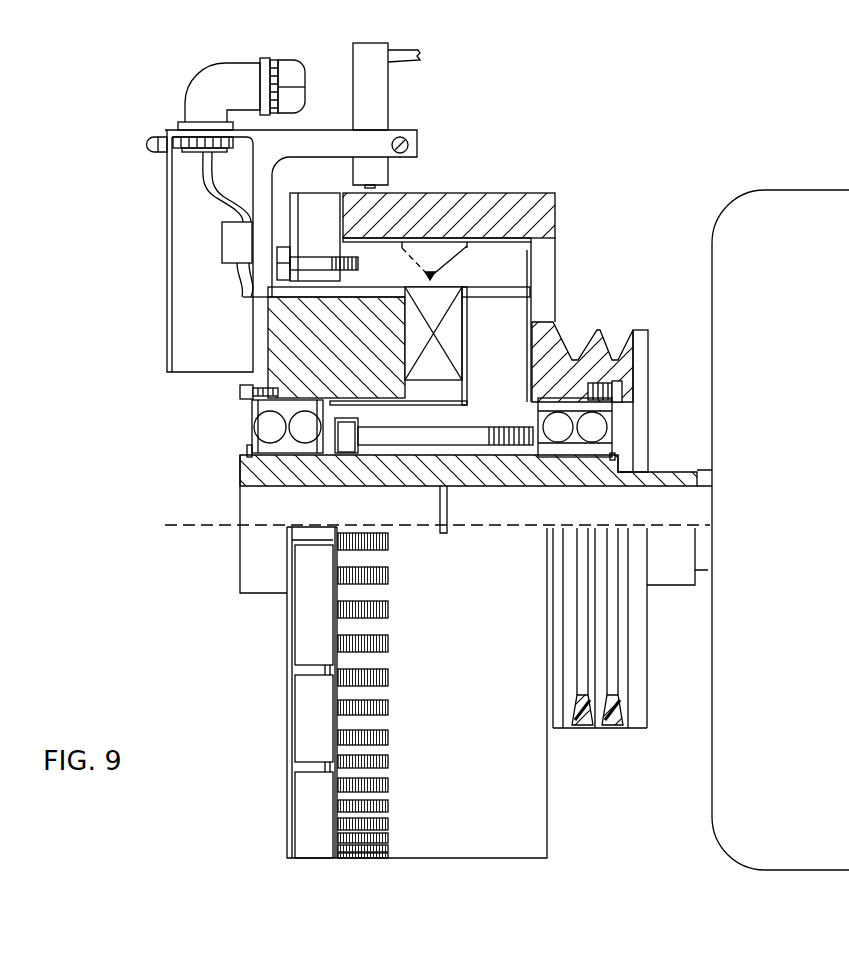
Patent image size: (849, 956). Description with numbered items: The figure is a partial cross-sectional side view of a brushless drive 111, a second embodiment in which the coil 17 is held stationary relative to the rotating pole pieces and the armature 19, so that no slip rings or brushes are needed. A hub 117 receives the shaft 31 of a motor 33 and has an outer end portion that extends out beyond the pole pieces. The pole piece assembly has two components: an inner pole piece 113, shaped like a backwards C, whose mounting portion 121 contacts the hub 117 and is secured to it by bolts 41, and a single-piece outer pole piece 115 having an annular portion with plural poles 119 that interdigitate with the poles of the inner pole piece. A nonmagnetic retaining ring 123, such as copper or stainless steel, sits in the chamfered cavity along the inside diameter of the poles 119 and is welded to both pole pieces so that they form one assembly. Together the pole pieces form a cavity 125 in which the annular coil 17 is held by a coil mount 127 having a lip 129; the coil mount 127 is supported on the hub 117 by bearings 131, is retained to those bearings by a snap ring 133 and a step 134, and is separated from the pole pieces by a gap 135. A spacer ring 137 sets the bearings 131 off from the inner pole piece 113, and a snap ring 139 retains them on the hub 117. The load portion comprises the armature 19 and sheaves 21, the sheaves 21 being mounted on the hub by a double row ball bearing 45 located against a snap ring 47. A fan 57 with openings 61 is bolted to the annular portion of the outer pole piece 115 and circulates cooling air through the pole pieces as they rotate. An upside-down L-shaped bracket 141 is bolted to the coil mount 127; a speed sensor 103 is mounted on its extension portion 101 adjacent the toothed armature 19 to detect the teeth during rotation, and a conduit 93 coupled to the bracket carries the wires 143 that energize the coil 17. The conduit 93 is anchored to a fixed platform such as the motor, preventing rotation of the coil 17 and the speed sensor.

The coil 17 is at (450, 356).
The armature 19 is at (538, 210).
The sheaves 21 is at (600, 335).
The shaft 31 is at (710, 487).
The motor 33 is at (793, 190).
The bolts 41 is at (449, 438).
The bearings 45 is at (592, 427).
The snap ring 47 is at (612, 455).
The fan 57 is at (288, 690).
The openings 61 is at (308, 698).
The conduit 93 is at (198, 75).
The extension portion 101 is at (318, 128).
The speed sensor 103 is at (377, 92).
The drive 111 is at (556, 167).
The inner pole piece 113 is at (512, 250).
The outer pole piece 115 is at (390, 250).
The hub 117 is at (247, 472).
The poles 119 is at (452, 248).
The mounting portion 121 is at (437, 417).
The retaining ring 123 is at (433, 276).
The cavity 125 is at (463, 287).
The coil mount 127 is at (285, 363).
The lip 129 is at (448, 390).
The bearings 131 is at (268, 428).
The snap ring 133 is at (240, 397).
The step 134 is at (333, 403).
The gap 135 is at (468, 381).
The spacer ring 137 is at (328, 455).
The snap ring 139 is at (247, 452).
The bracket 141 is at (262, 167).
The wires 143 is at (200, 187).